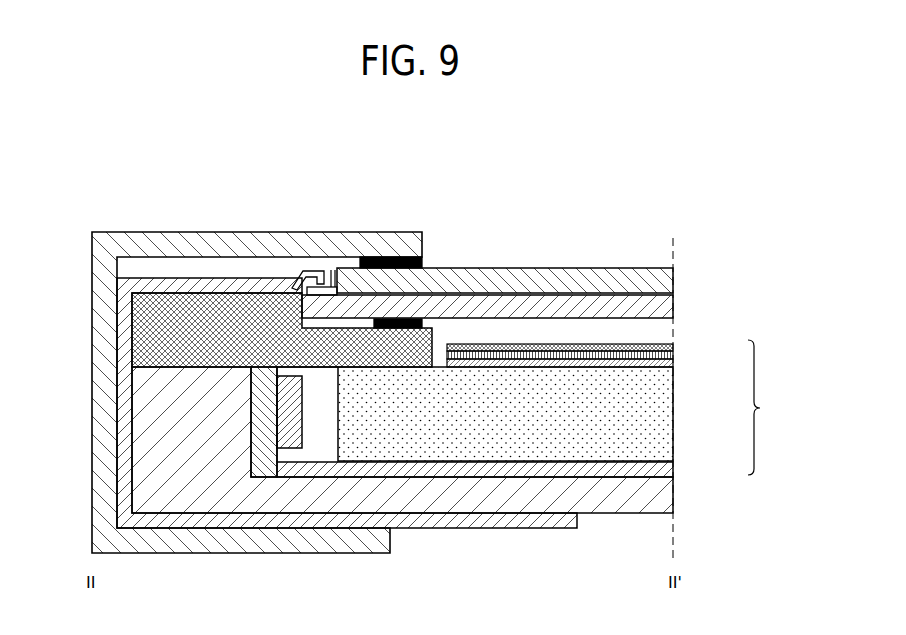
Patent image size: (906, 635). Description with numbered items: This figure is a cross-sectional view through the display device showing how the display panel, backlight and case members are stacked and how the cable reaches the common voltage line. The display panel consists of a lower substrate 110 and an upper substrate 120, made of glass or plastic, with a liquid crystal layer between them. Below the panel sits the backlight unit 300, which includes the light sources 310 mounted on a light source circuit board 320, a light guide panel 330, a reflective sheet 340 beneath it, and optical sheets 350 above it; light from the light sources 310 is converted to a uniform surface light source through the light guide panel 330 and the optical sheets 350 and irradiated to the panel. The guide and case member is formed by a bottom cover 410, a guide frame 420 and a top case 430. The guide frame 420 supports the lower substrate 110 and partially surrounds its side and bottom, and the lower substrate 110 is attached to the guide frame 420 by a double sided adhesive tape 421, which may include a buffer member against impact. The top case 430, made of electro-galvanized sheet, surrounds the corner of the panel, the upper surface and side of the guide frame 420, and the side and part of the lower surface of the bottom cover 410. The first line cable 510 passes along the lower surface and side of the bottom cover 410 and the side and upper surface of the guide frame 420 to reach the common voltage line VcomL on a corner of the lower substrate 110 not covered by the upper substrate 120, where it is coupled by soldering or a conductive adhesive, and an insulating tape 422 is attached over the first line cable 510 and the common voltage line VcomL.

The lower substrate 110 is at (660, 309).
The upper substrate 120 is at (660, 282).
The backlight unit 300 is at (771, 407).
The light sources 310 is at (288, 409).
The light source circuit board 320 is at (262, 428).
The light guide panel 330 is at (630, 385).
The reflective sheet 340 is at (660, 472).
The optical sheets 350 is at (673, 360).
The bottom cover 410 is at (657, 497).
The guide frame 420 is at (147, 338).
The double sided adhesive tape 421 is at (408, 321).
The insulating tape 422 is at (305, 272).
The top case 430 is at (107, 293).
The first line cable 510 is at (477, 518).
The common voltage line VcomL is at (333, 272).